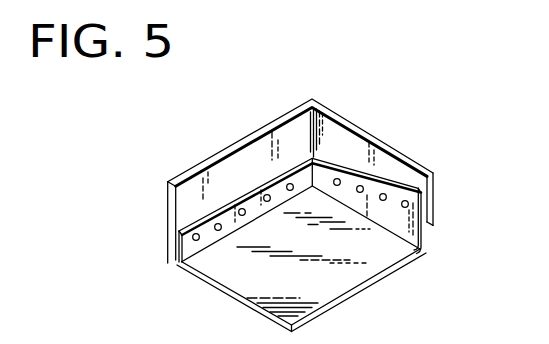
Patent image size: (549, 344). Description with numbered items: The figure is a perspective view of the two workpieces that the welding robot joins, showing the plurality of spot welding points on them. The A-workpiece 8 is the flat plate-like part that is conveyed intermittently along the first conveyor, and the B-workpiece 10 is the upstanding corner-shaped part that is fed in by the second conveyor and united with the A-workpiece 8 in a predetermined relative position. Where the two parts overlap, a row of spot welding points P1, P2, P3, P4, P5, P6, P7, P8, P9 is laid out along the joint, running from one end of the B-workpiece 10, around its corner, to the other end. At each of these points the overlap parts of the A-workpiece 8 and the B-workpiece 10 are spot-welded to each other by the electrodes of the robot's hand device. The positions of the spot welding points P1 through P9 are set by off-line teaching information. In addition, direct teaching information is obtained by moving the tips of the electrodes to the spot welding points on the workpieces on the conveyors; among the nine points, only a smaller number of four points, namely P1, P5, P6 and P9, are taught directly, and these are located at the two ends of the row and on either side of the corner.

The A-workpiece 8 is at (380, 258).
The B-workpiece 10 is at (330, 127).
The spot welding point P1 is at (196, 234).
The spot welding point P2 is at (218, 224).
The spot welding point P3 is at (242, 208).
The spot welding point P4 is at (267, 194).
The spot welding point P5 is at (290, 184).
The spot welding point P6 is at (337, 178).
The spot welding point P7 is at (360, 186).
The spot welding point P8 is at (383, 194).
The spot welding point P9 is at (405, 200).